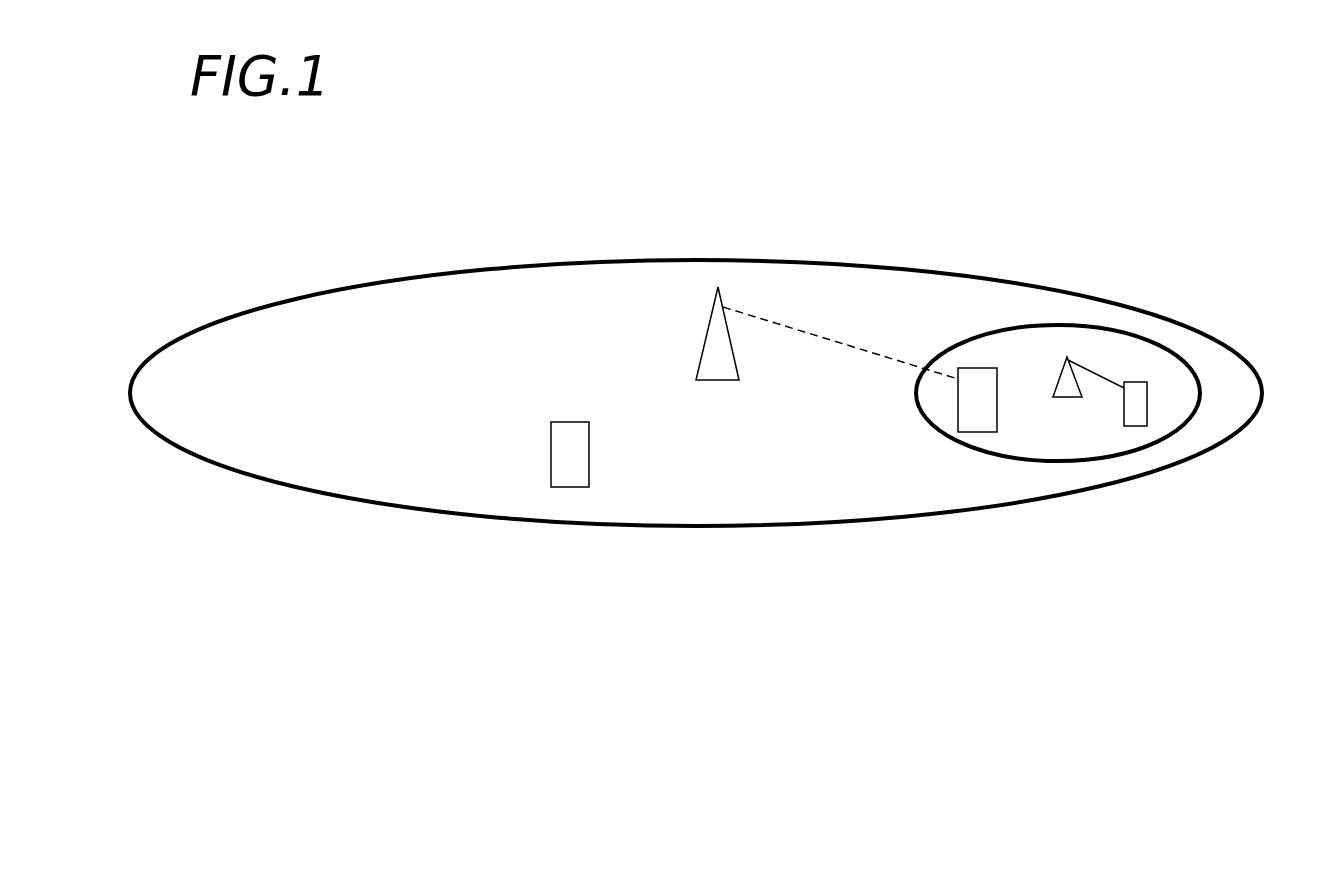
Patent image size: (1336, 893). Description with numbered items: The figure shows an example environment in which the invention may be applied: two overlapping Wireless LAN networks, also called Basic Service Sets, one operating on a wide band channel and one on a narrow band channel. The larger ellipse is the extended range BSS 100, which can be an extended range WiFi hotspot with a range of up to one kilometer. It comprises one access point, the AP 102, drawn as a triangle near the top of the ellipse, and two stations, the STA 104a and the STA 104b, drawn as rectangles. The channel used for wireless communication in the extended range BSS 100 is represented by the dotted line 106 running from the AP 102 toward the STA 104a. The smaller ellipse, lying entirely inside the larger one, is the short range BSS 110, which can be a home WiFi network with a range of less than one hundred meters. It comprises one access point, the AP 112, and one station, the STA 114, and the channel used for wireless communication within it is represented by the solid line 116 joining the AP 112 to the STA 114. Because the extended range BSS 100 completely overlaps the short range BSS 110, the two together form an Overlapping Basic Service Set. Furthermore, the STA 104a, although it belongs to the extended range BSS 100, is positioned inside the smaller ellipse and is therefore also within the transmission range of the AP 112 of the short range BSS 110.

The extended range BSS 100 is at (410, 276).
The AP 102 is at (718, 287).
The STA 104a is at (975, 368).
The STA 104b is at (565, 422).
The dotted line 106 is at (827, 342).
The short range BSS 110 is at (1197, 375).
The AP 112 is at (1067, 355).
The STA 114 is at (1125, 426).
The solid line 116 is at (1124, 382).